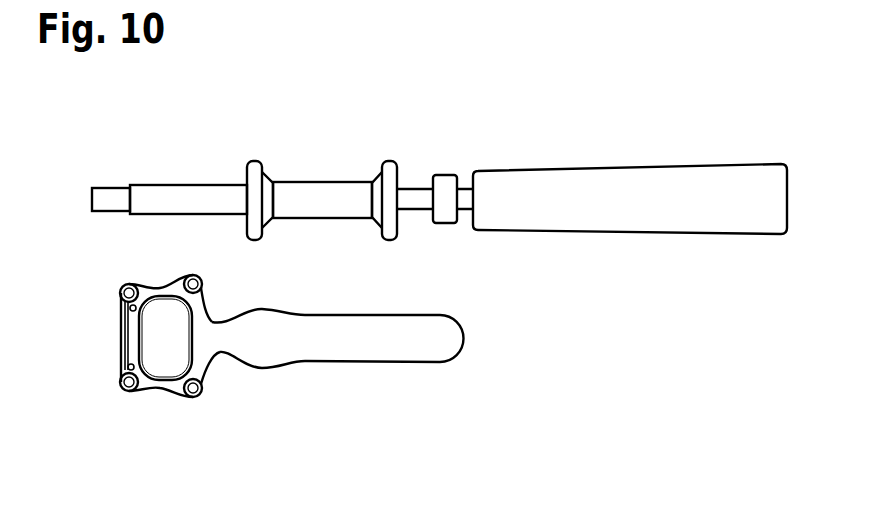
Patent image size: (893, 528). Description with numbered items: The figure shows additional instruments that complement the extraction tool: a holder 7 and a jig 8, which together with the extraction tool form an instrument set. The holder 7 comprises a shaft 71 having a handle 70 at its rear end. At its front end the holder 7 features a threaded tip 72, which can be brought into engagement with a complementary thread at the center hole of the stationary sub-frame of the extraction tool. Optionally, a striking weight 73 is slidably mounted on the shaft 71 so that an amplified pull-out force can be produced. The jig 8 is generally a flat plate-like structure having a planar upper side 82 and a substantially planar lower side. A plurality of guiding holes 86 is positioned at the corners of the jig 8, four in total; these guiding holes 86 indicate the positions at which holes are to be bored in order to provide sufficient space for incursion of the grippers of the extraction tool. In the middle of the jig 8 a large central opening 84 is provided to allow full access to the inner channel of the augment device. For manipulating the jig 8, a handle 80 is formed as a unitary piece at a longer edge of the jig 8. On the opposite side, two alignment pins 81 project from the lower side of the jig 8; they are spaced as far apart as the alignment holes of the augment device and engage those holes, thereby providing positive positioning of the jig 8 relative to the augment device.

The holder 7 is at (438, 150).
The handle 70 is at (658, 177).
The shaft 71 is at (203, 196).
The threaded tip 72 is at (112, 195).
The striking weight 73 is at (327, 196).
The jig 8 is at (301, 338).
The handle 80 is at (358, 348).
The alignment pins 81 is at (128, 310).
The upper side 82 is at (153, 387).
The central opening 84 is at (162, 310).
The guiding holes 86 is at (118, 292).